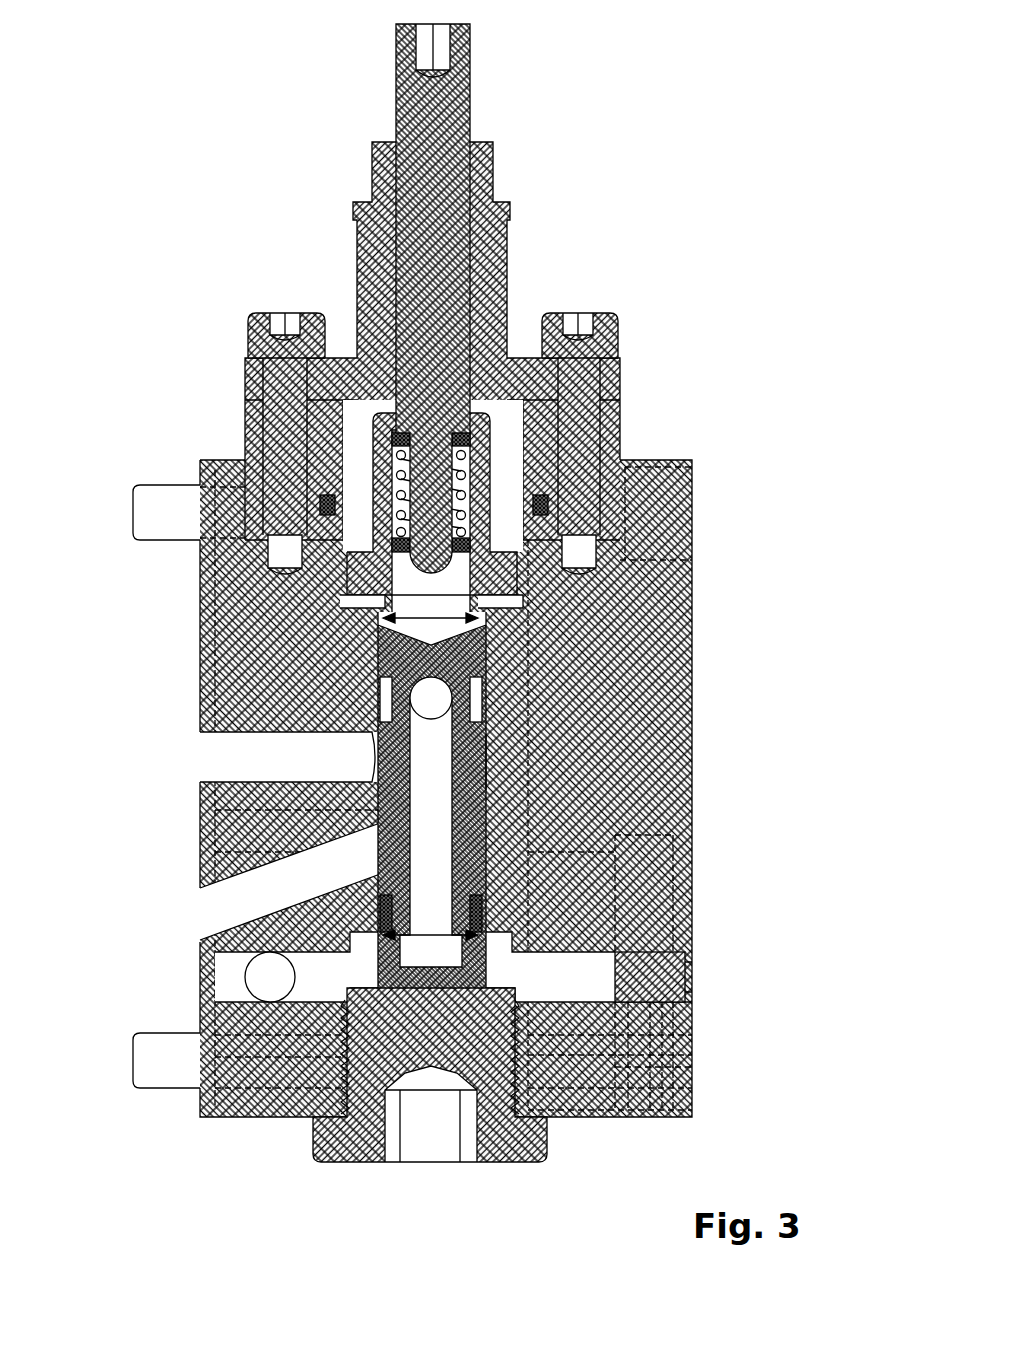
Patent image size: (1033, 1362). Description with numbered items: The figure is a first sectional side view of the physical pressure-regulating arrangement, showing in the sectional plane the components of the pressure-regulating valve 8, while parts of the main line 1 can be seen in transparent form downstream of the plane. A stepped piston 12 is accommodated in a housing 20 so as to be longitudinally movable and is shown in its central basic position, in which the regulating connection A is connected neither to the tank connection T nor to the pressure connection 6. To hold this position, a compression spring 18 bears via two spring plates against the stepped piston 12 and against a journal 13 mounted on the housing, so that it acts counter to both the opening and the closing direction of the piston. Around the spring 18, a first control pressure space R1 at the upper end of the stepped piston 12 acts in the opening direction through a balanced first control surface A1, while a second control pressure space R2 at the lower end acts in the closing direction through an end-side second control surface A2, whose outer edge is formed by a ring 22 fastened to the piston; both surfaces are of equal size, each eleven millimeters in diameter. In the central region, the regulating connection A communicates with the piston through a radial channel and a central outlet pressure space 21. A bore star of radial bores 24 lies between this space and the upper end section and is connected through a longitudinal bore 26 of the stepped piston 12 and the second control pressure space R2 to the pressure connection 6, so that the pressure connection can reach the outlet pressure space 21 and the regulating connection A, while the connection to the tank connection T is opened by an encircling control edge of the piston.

The main line 1 is at (307, 688).
The pressure connection 6 is at (268, 963).
The pressure-regulating valve 8 is at (525, 788).
The stepped piston 12 is at (459, 798).
The journal 13 is at (448, 384).
The spring 18 is at (470, 497).
The housing 20 is at (616, 741).
The outlet pressure space 21 is at (378, 803).
The ring 22 is at (480, 915).
The radial bores 24 is at (438, 703).
The longitudinal bore 26 is at (447, 820).
The regulating connection A is at (222, 758).
The tank connection T is at (208, 915).
The first control pressure space R1 is at (345, 598).
The second control pressure space R2 is at (380, 968).
The first control surface A1 is at (430, 606).
The second control surface A2 is at (430, 923).
The annular area AA is at (488, 760).